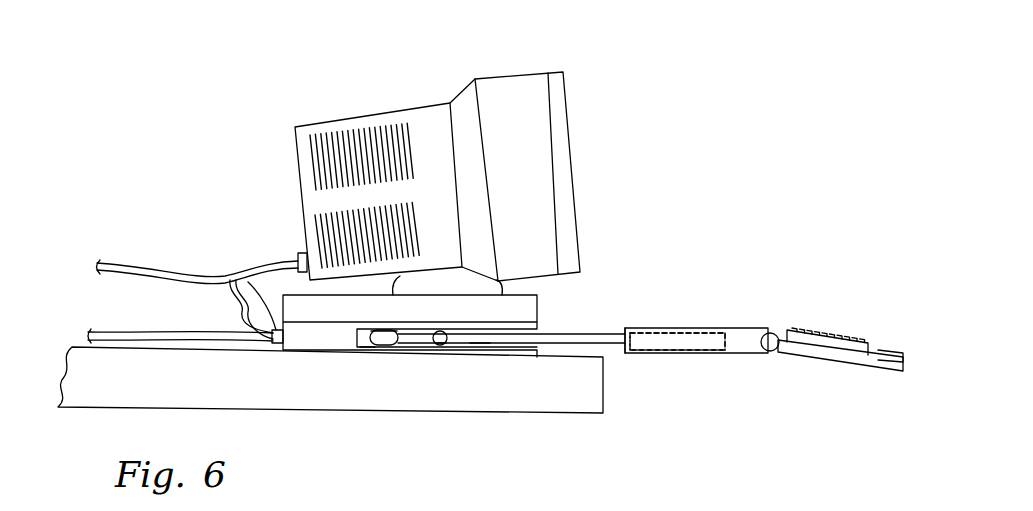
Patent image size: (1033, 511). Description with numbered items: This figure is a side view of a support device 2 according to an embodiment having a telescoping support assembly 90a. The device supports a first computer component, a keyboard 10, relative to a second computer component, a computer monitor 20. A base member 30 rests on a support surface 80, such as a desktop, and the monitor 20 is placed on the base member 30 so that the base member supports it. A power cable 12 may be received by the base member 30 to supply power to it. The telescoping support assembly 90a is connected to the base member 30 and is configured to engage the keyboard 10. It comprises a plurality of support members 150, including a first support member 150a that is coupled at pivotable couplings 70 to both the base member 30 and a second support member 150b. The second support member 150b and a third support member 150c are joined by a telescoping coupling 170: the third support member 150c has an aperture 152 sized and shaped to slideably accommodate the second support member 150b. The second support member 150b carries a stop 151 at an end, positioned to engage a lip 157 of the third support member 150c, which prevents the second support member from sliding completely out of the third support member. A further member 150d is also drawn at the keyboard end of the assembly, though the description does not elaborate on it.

The support device 2 is at (241, 226).
The keyboard 10 is at (863, 338).
The power cable 12 is at (175, 332).
The computer monitor 20 is at (527, 72).
The base member 30 is at (260, 273).
The pivotable coupling 70 is at (367, 358).
The support surface 80 is at (80, 345).
The telescoping support assembly 90a is at (687, 319).
The support members 150 is at (769, 368).
The first support member 150a is at (415, 345).
The second support member 150b is at (480, 347).
The third support member 150c is at (725, 330).
The keyboard tray arm segment 150d is at (832, 360).
The stop 151 is at (660, 352).
The aperture 152 is at (703, 352).
The lip 157 is at (633, 355).
The telescoping coupling 170 is at (634, 319).